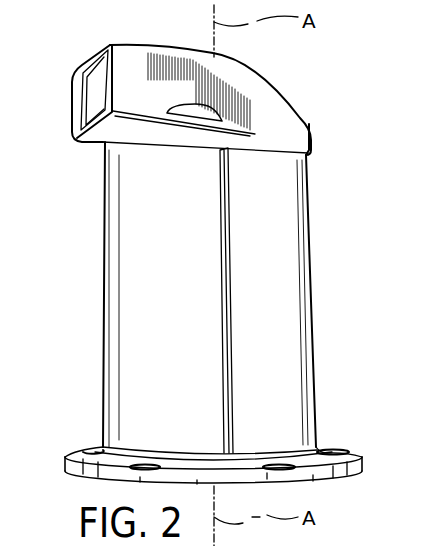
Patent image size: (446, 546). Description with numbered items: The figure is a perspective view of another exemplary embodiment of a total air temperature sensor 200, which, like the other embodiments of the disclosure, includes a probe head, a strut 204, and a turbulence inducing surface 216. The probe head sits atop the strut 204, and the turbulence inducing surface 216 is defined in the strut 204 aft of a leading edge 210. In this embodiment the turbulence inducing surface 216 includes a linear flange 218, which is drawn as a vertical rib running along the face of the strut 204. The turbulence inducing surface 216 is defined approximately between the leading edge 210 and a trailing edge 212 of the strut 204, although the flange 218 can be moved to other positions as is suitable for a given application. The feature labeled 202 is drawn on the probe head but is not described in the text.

The total air temperature sensor 200 is at (302, 78).
The opening / slot in hood 202 is at (193, 76).
The strut 204 is at (280, 337).
The leading edge 210 is at (105, 360).
The trailing edge 212 is at (313, 270).
The turbulence inducing surface 216 is at (262, 378).
The linear flange 218 is at (230, 200).